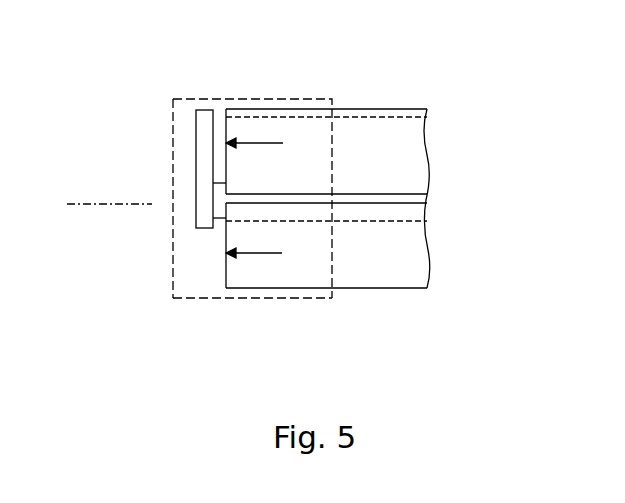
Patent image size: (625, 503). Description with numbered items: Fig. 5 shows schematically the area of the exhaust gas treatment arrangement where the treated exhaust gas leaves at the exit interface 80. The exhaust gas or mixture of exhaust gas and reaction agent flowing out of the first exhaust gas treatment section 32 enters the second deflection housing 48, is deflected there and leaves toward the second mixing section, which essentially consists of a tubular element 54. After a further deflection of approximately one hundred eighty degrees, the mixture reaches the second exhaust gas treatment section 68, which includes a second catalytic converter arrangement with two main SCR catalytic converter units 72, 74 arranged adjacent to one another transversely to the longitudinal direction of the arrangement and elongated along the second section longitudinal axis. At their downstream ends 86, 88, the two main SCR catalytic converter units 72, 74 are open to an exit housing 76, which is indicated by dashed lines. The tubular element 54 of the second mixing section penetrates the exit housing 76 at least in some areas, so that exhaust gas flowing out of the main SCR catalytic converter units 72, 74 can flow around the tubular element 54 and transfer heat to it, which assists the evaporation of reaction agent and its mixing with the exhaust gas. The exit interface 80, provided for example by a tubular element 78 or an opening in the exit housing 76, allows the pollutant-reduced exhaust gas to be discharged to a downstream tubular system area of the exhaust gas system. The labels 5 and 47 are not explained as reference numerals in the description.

The second deflection housing 48 is at (202, 108).
The exit interface 80 is at (173, 137).
The tubular element 78 is at (178, 171).
The downstream end 86 is at (243, 123).
The main SCR catalytic converter unit 72 is at (412, 152).
The first exhaust gas treatment section 32 is at (400, 225).
The main SCR catalytic converter unit 74 is at (415, 260).
The second exhaust gas treatment section 68 is at (431, 304).
The tubular element 54 is at (220, 207).
The downstream end 88 is at (242, 280).
The exit housing 76 is at (287, 300).
The axis 5 is at (109, 222).
The section 47 is at (49, 270).